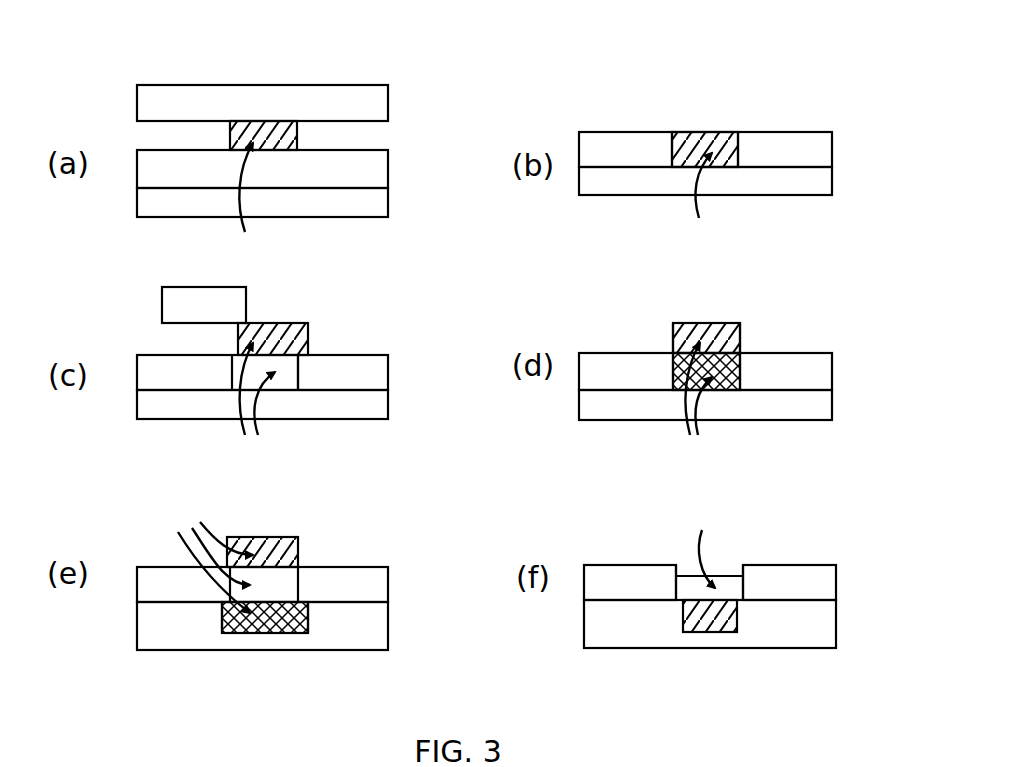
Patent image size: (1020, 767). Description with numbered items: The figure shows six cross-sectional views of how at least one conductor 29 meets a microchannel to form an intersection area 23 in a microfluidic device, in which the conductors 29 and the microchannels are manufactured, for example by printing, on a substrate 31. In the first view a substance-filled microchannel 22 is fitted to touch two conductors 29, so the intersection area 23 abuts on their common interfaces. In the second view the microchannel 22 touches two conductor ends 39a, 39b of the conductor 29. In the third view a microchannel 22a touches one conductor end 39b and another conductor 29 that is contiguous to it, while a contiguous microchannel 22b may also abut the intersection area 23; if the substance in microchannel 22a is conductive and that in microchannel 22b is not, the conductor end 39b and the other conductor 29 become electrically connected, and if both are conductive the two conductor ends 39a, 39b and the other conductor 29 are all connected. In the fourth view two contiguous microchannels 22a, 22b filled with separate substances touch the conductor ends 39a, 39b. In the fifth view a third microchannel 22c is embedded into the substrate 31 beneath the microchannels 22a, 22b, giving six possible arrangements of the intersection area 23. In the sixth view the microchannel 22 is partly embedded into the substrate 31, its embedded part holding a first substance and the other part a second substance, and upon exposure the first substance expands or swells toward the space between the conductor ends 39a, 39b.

The microchannel 22 is at (268, 121).
The microchannel 22a is at (288, 323).
The microchannel 22b is at (235, 390).
The microchannel 22c is at (262, 633).
The intersection area 23 is at (447, 378).
The conductor 29 is at (203, 85).
The substrate 31 is at (360, 217).
The conductor end 39a is at (668, 147).
The conductor end 39b is at (742, 147).